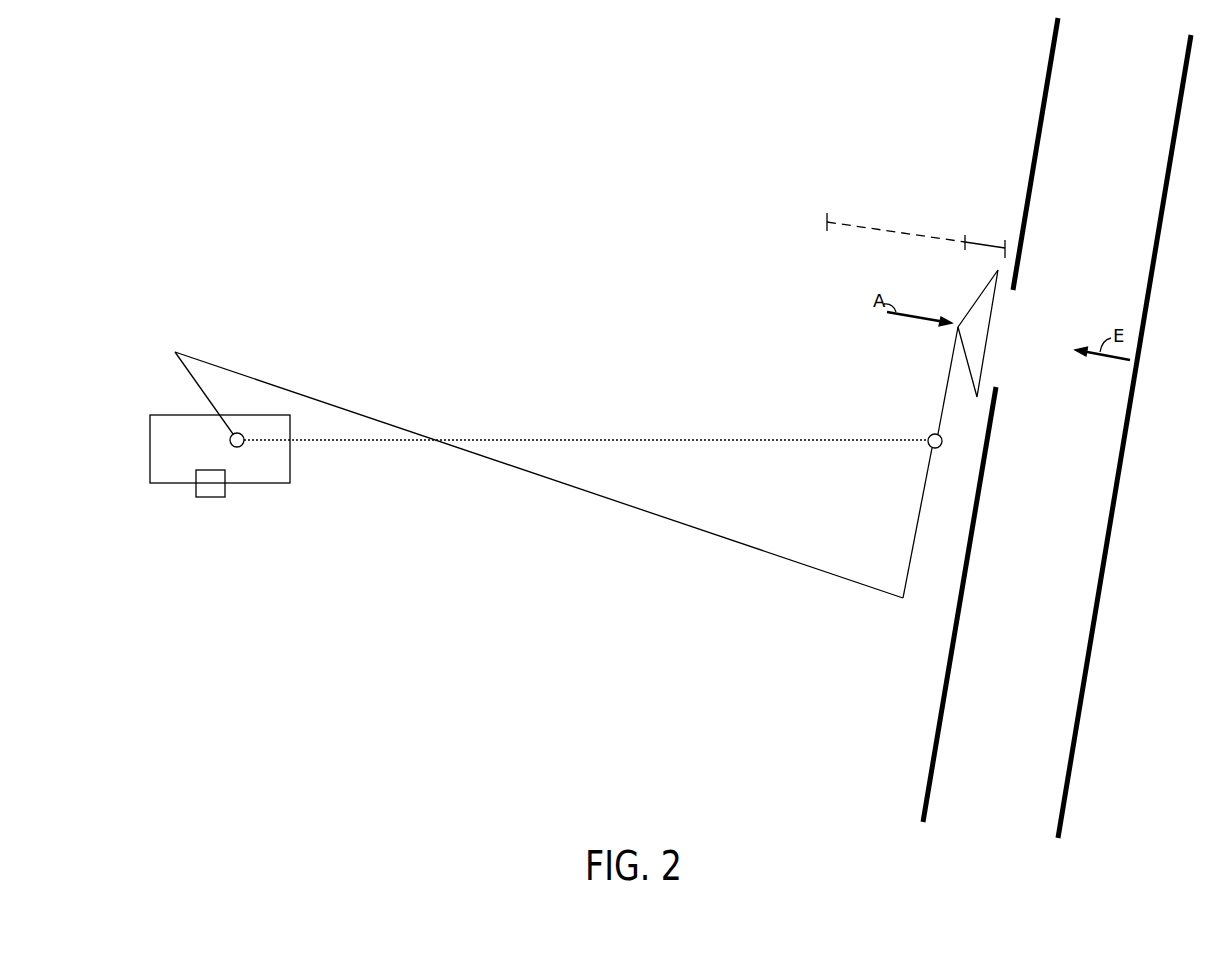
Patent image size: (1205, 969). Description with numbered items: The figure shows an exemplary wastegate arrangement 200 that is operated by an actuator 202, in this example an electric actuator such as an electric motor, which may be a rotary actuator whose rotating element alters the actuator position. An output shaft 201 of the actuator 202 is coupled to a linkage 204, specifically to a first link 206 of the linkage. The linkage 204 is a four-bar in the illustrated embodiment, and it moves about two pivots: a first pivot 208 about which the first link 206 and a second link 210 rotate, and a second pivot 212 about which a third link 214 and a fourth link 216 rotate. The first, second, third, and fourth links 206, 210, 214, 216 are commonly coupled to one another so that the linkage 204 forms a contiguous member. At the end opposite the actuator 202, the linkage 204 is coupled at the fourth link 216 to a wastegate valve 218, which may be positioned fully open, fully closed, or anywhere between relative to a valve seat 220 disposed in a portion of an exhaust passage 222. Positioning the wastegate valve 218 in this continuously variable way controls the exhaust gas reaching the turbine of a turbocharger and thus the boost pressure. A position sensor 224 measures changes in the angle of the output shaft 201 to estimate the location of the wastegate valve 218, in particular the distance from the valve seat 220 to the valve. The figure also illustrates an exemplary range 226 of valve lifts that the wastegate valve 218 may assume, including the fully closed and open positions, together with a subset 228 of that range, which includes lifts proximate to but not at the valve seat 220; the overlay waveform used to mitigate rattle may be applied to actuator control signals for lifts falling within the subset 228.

The wastegate arrangement 200 is at (565, 238).
The output shaft 201 is at (229, 440).
The actuator 202 is at (150, 415).
The linkage 204 is at (517, 523).
The first link 206 is at (175, 352).
The first pivot 208 is at (238, 447).
The second link 210 is at (328, 403).
The second pivot 212 is at (942, 441).
The third link 214 is at (912, 545).
The fourth link 216 is at (942, 411).
The wastegate valve 218 is at (974, 303).
The valve seat 220 is at (1013, 292).
The exhaust passage 222 is at (1052, 665).
The position sensor 224 is at (222, 497).
The range 226 is at (852, 221).
The subset 228 is at (988, 231).